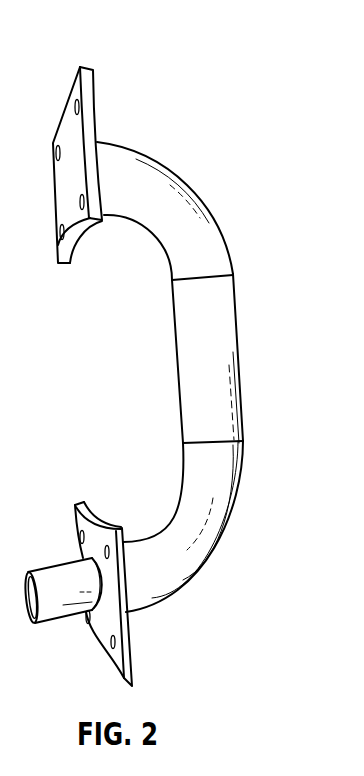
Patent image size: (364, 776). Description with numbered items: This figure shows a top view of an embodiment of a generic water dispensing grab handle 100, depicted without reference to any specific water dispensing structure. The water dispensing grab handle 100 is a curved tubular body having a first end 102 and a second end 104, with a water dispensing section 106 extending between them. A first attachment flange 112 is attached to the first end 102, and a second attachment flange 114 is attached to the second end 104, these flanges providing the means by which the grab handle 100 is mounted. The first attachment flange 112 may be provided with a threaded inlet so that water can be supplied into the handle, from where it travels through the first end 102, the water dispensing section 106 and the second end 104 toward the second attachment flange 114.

The water dispensing grab handle 100 is at (237, 57).
The first end 102 is at (170, 598).
The second end 104 is at (128, 145).
The water dispensing section 106 is at (235, 318).
The first attachment flange 112 is at (93, 514).
The second attachment flange 114 is at (94, 82).